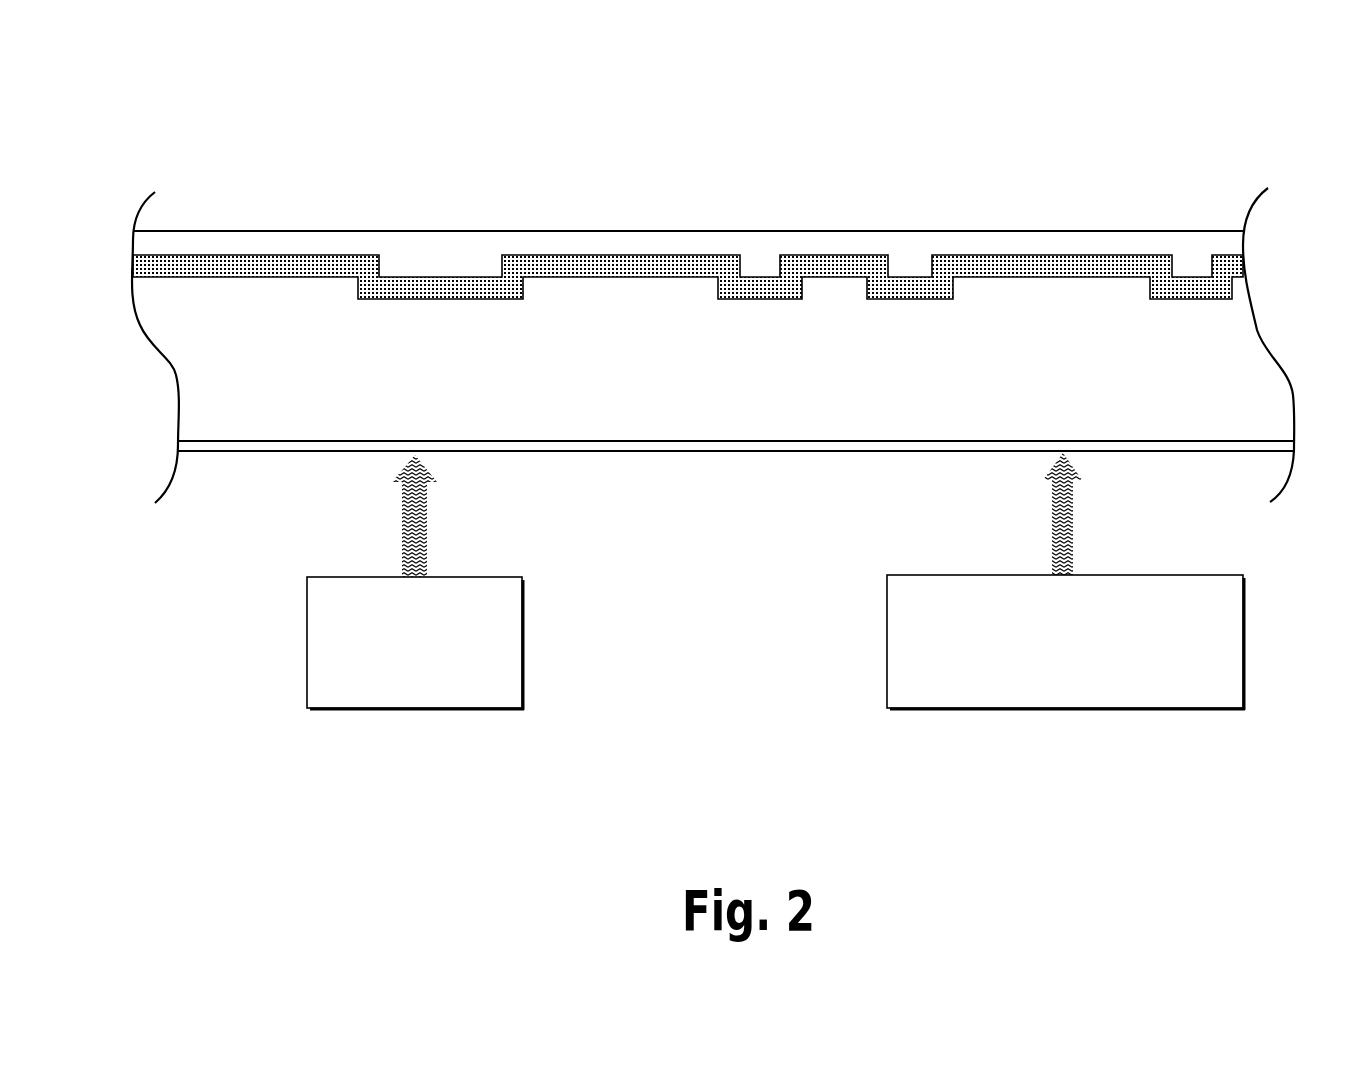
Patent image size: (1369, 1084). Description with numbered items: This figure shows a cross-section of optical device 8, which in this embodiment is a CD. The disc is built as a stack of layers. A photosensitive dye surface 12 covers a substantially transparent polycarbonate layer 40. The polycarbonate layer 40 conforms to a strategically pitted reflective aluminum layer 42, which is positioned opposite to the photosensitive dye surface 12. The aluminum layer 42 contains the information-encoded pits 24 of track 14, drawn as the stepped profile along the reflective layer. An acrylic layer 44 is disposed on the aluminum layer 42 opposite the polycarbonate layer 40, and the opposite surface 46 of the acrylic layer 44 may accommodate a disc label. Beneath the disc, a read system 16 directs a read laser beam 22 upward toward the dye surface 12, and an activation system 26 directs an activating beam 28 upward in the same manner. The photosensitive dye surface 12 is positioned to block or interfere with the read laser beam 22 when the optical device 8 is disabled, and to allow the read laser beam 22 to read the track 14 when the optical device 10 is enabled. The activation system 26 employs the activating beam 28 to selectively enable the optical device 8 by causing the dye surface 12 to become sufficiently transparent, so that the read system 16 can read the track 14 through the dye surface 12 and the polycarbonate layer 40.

The optical device 8 is at (1272, 322).
The optical device 10 is at (1310, 150).
The photosensitive dye surface 12 is at (188, 444).
The track 14 is at (302, 312).
The read system 16 is at (501, 577).
The read laser beam 22 is at (401, 522).
The information-encoded pits 24 is at (757, 253).
The activation system 26 is at (1139, 575).
The activating beam 28 is at (1051, 512).
The polycarbonate layer 40 is at (188, 382).
The reflective aluminum layer 42 is at (135, 278).
The acrylic layer 44 is at (137, 232).
The opposite surface 46 is at (1058, 230).